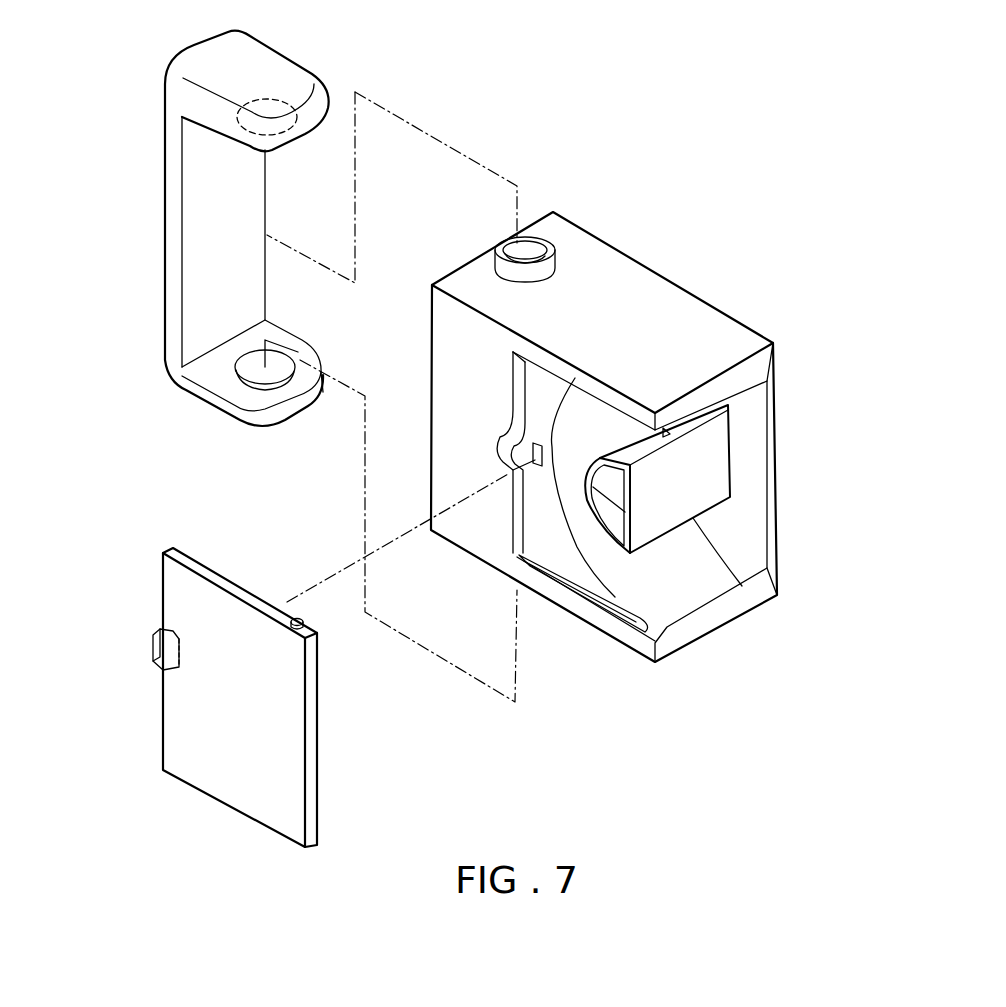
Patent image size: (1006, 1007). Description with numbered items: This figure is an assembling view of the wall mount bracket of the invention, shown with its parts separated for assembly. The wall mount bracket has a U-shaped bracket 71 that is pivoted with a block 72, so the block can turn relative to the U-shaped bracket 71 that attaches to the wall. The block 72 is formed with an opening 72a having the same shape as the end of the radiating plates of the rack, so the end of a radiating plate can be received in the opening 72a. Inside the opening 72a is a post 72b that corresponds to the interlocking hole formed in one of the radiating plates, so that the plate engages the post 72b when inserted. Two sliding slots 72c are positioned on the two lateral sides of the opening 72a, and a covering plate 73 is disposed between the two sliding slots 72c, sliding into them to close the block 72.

The U-shaped bracket 71 is at (218, 232).
The block 72 is at (635, 323).
The opening 72a is at (748, 475).
The post 72b is at (657, 522).
The sliding slots 72c is at (593, 597).
The covering plate 73 is at (273, 740).